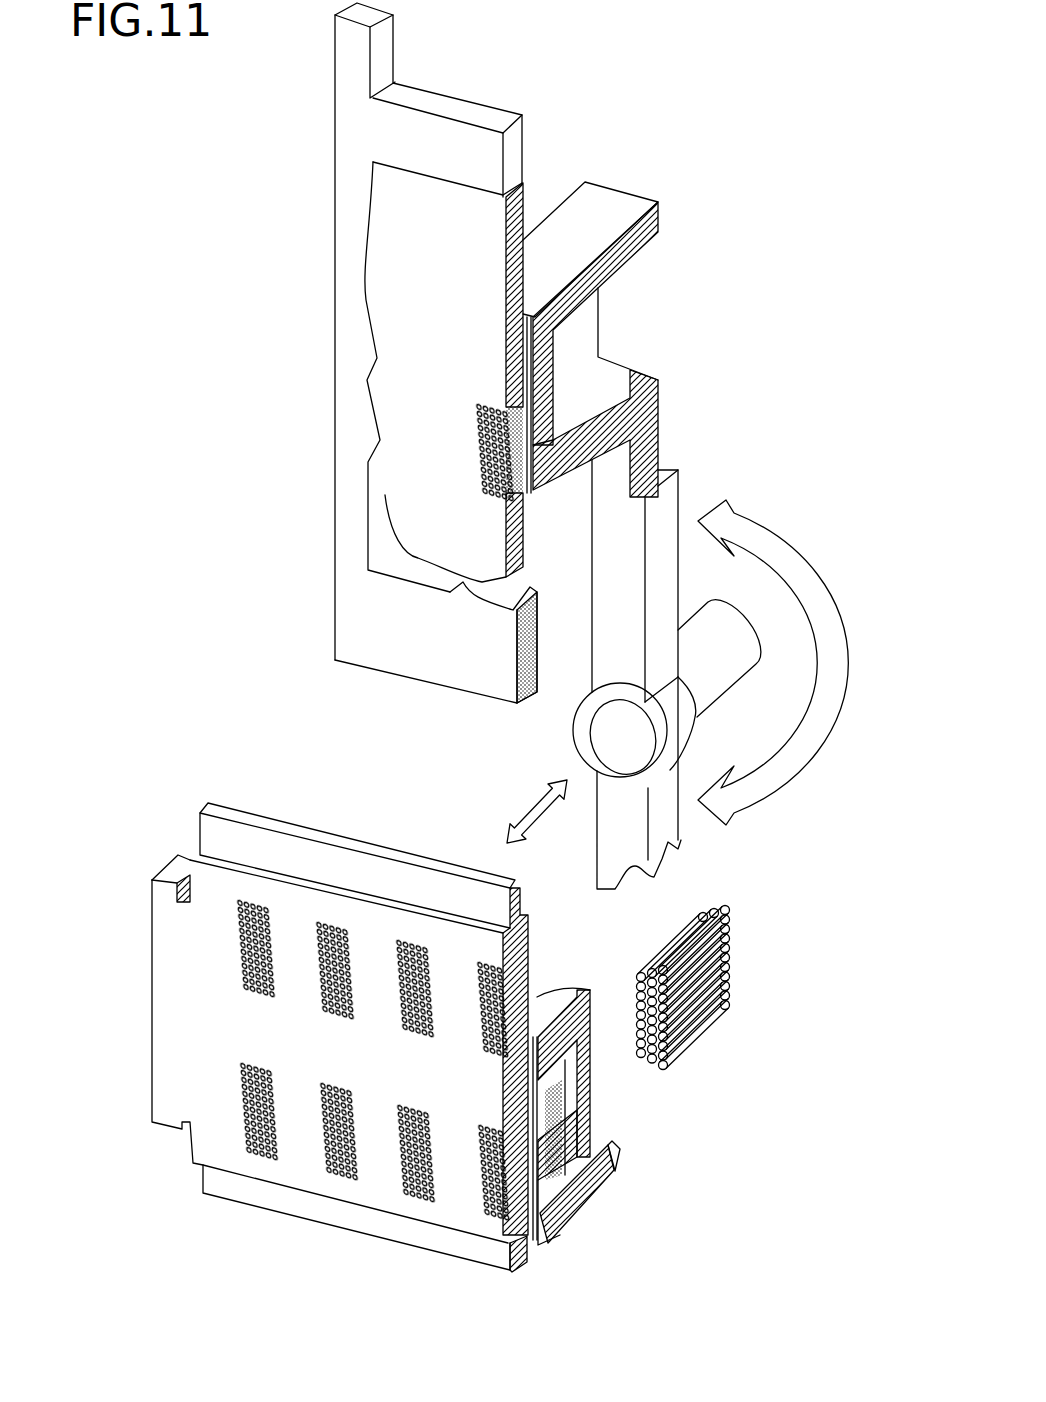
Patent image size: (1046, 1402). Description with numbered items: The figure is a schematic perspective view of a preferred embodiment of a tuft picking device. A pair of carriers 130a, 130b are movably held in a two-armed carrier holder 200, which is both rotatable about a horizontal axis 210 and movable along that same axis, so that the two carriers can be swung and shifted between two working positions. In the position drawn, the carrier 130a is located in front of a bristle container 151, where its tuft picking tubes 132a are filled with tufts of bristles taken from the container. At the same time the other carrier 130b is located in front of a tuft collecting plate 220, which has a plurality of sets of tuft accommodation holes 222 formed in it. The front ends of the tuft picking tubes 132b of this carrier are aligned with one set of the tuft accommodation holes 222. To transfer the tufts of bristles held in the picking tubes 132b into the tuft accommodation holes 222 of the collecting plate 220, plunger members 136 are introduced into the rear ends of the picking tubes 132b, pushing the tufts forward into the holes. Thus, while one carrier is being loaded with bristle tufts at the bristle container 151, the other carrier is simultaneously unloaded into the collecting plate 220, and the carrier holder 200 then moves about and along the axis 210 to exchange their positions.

The bristle container 151 is at (330, 284).
The carrier 130a is at (583, 397).
The tuft picking tubes 132a is at (508, 412).
The two-armed carrier holder 200 is at (673, 486).
The horizontal axis 210 is at (733, 657).
The tuft collecting plate 220 is at (294, 1137).
The tuft accommodation holes 222 is at (313, 1002).
The tuft picking tubes 132b is at (568, 1082).
The carrier 130b is at (612, 1158).
The plunger members 136 is at (692, 1003).